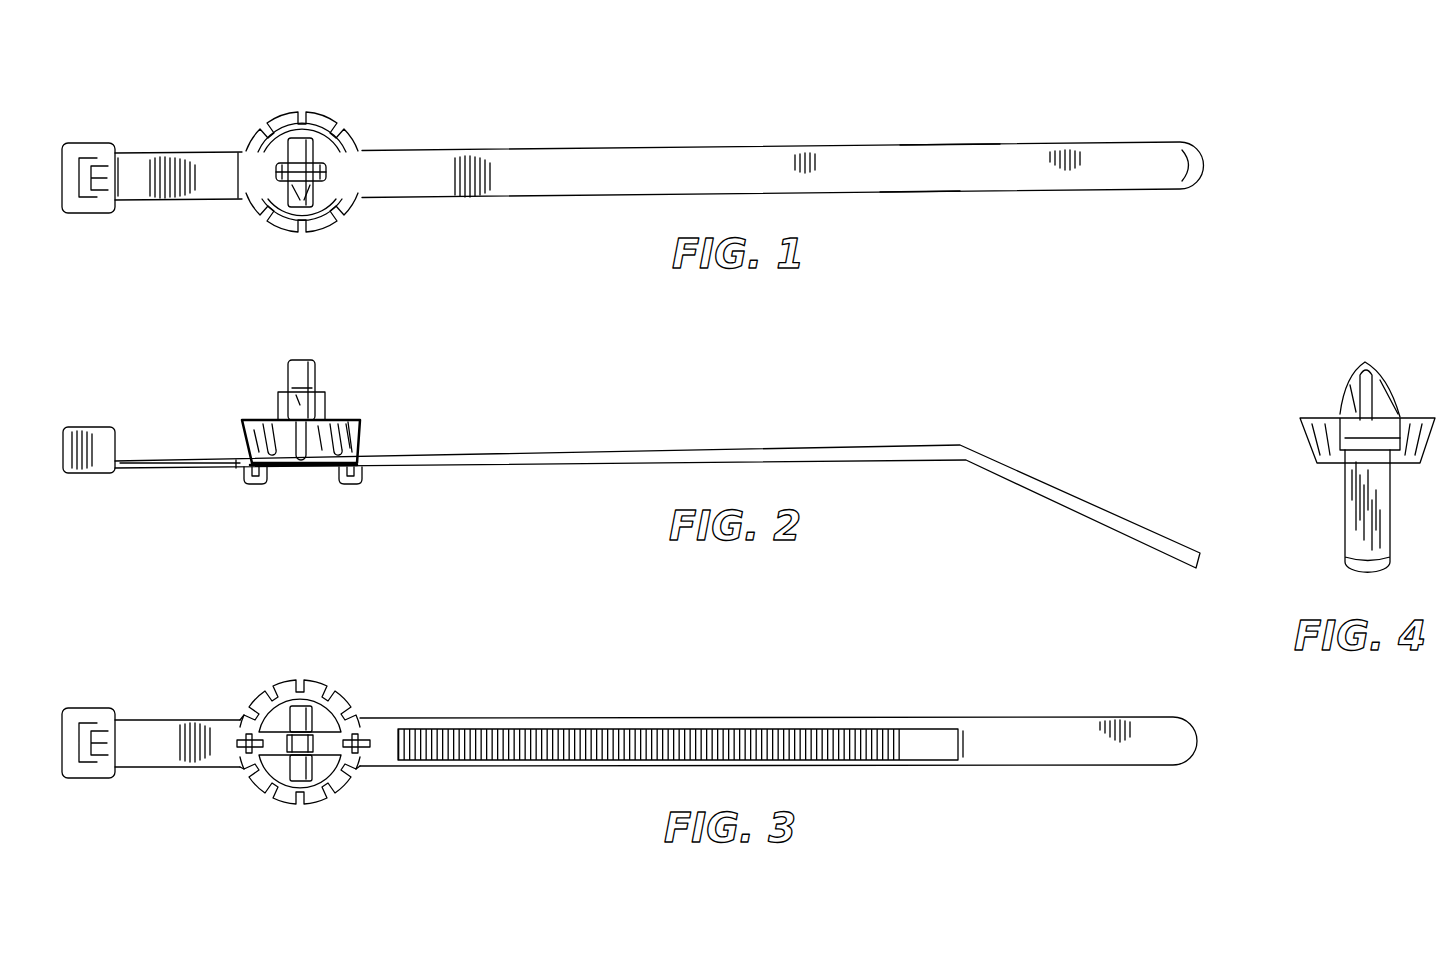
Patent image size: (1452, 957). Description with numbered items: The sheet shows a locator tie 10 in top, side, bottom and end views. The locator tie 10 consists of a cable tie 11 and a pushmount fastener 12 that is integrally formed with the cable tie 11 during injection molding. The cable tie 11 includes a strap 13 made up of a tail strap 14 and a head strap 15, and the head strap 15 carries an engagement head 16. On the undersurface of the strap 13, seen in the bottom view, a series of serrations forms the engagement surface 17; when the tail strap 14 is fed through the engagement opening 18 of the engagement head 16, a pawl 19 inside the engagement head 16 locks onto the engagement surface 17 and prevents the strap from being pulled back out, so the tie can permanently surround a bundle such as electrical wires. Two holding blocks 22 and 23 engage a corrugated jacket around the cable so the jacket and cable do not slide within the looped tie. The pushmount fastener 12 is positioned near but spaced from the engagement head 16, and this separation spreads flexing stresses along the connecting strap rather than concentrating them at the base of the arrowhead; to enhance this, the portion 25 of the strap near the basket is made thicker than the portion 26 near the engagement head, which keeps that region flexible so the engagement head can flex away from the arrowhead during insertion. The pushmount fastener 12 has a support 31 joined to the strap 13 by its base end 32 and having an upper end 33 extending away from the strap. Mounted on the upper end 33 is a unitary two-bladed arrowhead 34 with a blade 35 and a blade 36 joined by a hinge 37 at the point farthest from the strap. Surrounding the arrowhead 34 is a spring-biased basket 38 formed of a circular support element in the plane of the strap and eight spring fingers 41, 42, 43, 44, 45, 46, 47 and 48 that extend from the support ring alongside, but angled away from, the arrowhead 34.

In FIG. 1, the locator tie 10 is at (604, 155).
In FIG. 2, the locator tie 10 is at (657, 506).
In FIG. 3, the locator tie 10 is at (656, 742).
In FIG. 1, the cable tie 11 is at (955, 152).
In FIG. 1, the pushmount fastener 12 is at (292, 148).
In FIG. 1, the strap 13 is at (918, 185).
In FIG. 1, the tail strap 14 is at (1185, 185).
In FIG. 1, the head strap 15 is at (124, 190).
In FIG. 1, the engagement head 16 is at (84, 207).
In FIG. 2, the engagement head 16 is at (100, 430).
In FIG. 3, the engagement head 16 is at (88, 743).
In FIG. 3, the engagement surface 17 is at (598, 742).
In FIG. 1, the engagement opening 18 is at (83, 165).
In FIG. 1, the pawl 19 is at (104, 168).
In FIG. 2, the holding block 22 is at (250, 487).
In FIG. 3, the holding block 22 is at (243, 752).
In FIG. 2, the holding block 23 is at (350, 486).
In FIG. 3, the holding block 23 is at (365, 750).
In FIG. 1, the strap portion near the basket 25 is at (237, 188).
In FIG. 2, the strap portion near the basket 25 is at (232, 468).
In FIG. 1, the strap portion near the engagement head 26 is at (160, 190).
In FIG. 2, the strap portion near the engagement head 26 is at (137, 470).
In FIG. 2, the support 31 is at (322, 412).
In FIG. 4, the support 31 is at (1343, 446).
In FIG. 4, the base end 32 is at (1340, 452).
In FIG. 2, the upper end 33 is at (316, 395).
In FIG. 4, the upper end 33 is at (1345, 423).
In FIG. 1, the arrowhead 34 is at (333, 182).
In FIG. 2, the arrowhead 34 is at (305, 363).
In FIG. 4, the arrowhead 34 is at (1356, 390).
In FIG. 3, the arrowhead 34 is at (306, 718).
In FIG. 1, the blade 35 is at (270, 118).
In FIG. 4, the blade 35 is at (1392, 387).
In FIG. 1, the blade 36 is at (313, 190).
In FIG. 2, the blade 36 is at (292, 400).
In FIG. 4, the blade 36 is at (1347, 404).
In FIG. 1, the hinge 37 is at (322, 168).
In FIG. 4, the hinge 37 is at (1372, 367).
In FIG. 1, the spring-biased basket 38 is at (333, 232).
In FIG. 2, the spring-biased basket 38 is at (360, 434).
In FIG. 3, the spring finger 41 is at (258, 795).
In FIG. 3, the spring finger 42 is at (284, 808).
In FIG. 3, the spring finger 43 is at (320, 800).
In FIG. 3, the spring finger 44 is at (343, 788).
In FIG. 3, the spring finger 45 is at (355, 703).
In FIG. 3, the spring finger 46 is at (300, 700).
In FIG. 3, the spring finger 47 is at (280, 678).
In FIG. 3, the spring finger 48 is at (245, 700).